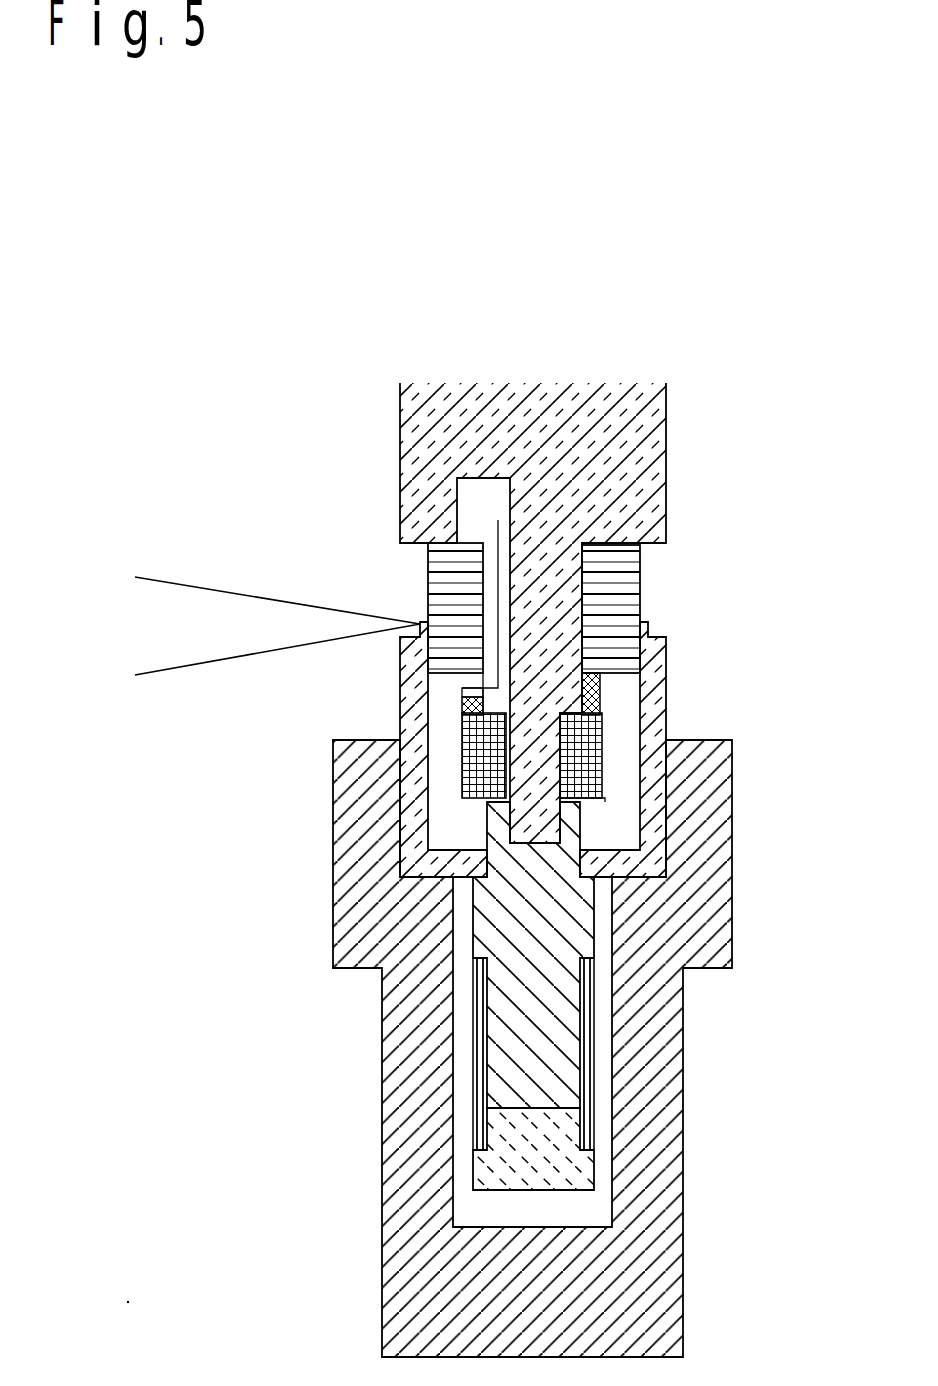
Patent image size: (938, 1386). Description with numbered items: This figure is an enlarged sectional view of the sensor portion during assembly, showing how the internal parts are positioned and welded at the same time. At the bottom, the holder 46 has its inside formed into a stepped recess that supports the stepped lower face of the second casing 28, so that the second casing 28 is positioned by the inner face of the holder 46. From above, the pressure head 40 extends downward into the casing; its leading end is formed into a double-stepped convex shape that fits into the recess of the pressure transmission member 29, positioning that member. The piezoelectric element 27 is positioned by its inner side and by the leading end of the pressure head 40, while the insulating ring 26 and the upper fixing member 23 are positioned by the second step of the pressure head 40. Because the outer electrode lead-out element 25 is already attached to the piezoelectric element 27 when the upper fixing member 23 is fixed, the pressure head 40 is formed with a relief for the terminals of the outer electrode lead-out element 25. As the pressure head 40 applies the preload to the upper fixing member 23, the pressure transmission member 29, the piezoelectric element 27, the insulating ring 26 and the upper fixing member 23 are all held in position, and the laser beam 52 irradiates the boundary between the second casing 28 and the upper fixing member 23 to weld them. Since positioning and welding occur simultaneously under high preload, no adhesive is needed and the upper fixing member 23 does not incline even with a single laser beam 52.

The pressure head 40 is at (643, 423).
The upper fixing member 23 is at (620, 590).
The insulating ring 26 is at (603, 685).
The outer electrode lead-out element 25 is at (600, 745).
The piezoelectric element 27 is at (603, 790).
The second casing 28 is at (645, 868).
The pressure transmission member 29 is at (563, 997).
The holder 46 is at (658, 1143).
The laser beam 52 is at (243, 593).